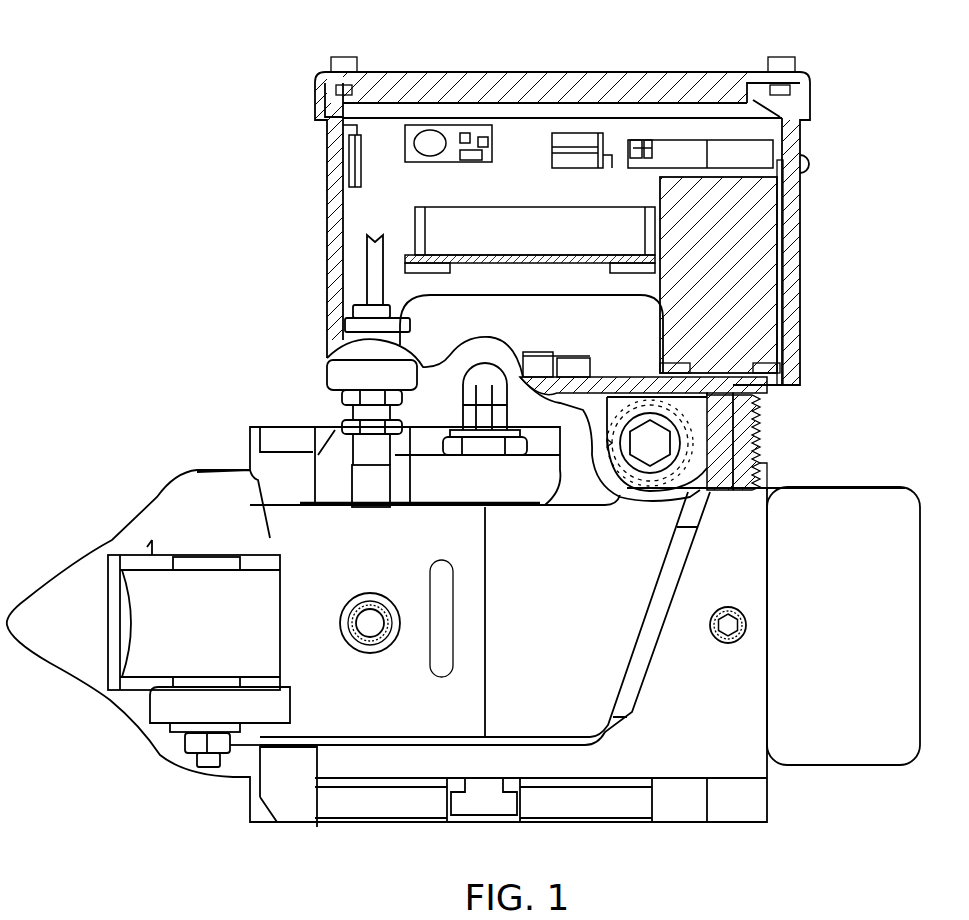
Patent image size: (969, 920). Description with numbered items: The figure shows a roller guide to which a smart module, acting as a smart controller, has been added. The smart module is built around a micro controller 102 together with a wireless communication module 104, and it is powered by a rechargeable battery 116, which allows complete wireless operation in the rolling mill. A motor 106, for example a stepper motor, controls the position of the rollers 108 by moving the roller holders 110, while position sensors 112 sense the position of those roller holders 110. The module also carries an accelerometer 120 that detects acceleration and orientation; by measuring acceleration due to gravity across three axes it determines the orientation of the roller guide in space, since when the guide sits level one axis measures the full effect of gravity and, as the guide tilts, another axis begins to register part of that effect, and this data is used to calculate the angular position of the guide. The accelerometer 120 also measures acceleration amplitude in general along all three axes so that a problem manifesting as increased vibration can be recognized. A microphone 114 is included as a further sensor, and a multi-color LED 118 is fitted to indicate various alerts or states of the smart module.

The micro controller 102 is at (680, 152).
The wireless communication module 104 is at (352, 158).
The motor 106 is at (743, 245).
The rollers 108 is at (143, 597).
The roller holders 110 is at (260, 537).
The position sensors 112 is at (365, 410).
The microphone 114 is at (450, 138).
The rechargeable battery 116 is at (432, 220).
The multi-color LED 118 is at (879, 174).
The accelerometer 120 is at (599, 349).